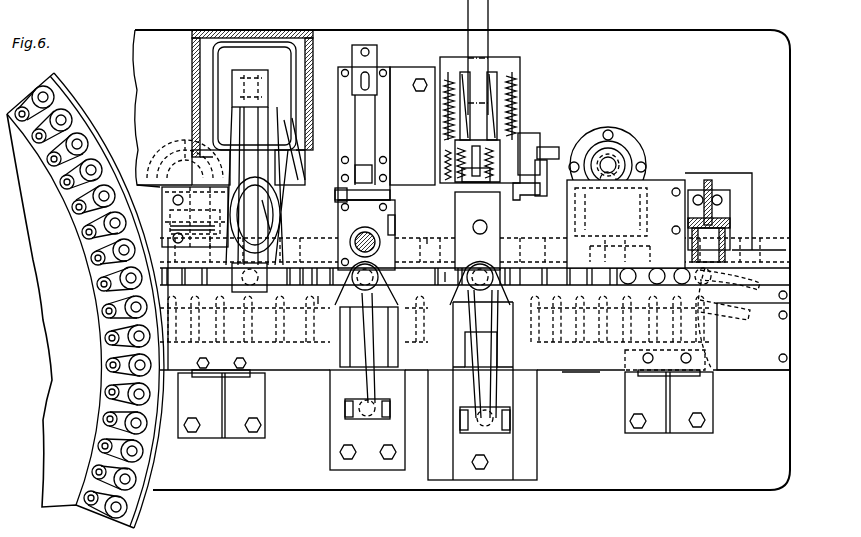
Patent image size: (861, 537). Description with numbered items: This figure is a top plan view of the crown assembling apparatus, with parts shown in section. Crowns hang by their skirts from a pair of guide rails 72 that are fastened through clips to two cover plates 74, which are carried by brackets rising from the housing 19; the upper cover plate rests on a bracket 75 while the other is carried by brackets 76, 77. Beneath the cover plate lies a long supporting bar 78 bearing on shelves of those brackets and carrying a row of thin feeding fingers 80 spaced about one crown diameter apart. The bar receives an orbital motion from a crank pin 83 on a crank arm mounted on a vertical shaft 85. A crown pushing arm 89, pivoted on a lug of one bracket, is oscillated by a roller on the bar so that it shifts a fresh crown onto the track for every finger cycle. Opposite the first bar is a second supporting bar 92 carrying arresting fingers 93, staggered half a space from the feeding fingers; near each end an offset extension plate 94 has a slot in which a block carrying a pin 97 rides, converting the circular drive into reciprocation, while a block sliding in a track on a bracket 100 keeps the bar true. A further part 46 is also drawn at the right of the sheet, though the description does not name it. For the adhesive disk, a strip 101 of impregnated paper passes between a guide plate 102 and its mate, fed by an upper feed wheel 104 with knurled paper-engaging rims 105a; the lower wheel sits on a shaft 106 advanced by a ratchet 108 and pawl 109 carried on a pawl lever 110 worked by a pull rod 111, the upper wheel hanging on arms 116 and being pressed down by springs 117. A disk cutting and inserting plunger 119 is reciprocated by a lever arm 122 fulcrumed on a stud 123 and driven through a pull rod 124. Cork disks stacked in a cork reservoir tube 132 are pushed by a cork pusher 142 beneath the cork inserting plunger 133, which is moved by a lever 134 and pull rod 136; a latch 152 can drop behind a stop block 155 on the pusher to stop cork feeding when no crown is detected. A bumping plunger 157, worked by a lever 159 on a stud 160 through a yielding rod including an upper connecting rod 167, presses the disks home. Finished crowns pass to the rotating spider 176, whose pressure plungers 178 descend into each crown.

The housing 19 is at (461, 260).
The bearing block 46 is at (726, 232).
The guide rails 72 is at (534, 277).
The cover plates 74 is at (265, 212).
The bracket 75 is at (196, 186).
The bracket 76 is at (221, 398).
The bracket 77 is at (669, 391).
The supporting bar 78 is at (565, 340).
The fingers 80 is at (318, 300).
The crank pin 83 is at (160, 193).
The vertical shaft 85 is at (183, 158).
The crown pushing arm 89 is at (700, 303).
The second supporting bar 92 is at (434, 231).
The fingers 93 is at (445, 278).
The offset extension plate 94 is at (648, 200).
The pin 97 is at (172, 226).
The bracket 100 is at (505, 536).
The strip 101 is at (488, 13).
The guide plate 102 is at (522, 120).
The upper feed wheel 104 is at (482, 182).
The knurled paper-engaging rims 105a is at (477, 231).
The shaft 106 is at (580, 153).
The ratchet 108 is at (548, 158).
The pawl 109 is at (532, 138).
The pawl lever 110 is at (547, 182).
The pull rod 111 is at (535, 196).
The arms 116 is at (495, 100).
The springs 117 is at (513, 106).
The disk cutting and inserting plunger 119 is at (485, 282).
The lever arm 122 is at (498, 402).
The stud 123 is at (510, 433).
The pull rod 124 is at (480, 353).
The cork reservoir tube 132 is at (380, 235).
The cork inserting plunger 133 is at (373, 283).
The lever 134 is at (362, 387).
The pull rod 136 is at (372, 414).
The cork pusher 142 is at (370, 142).
The latch 152 is at (335, 194).
The stop block 155 is at (378, 175).
The bumping plunger 157 is at (257, 289).
The lever 159 is at (250, 125).
The stud 160 is at (252, 78).
The upper connecting rod 167 is at (289, 219).
The upper rotating spider 176 is at (85, 300).
The pressure plungers 178 is at (140, 459).